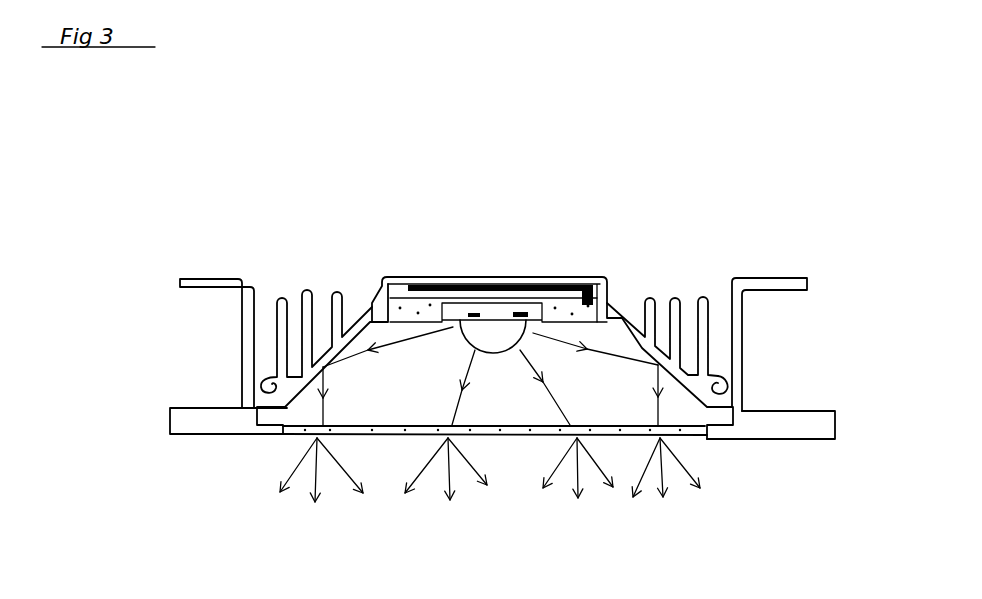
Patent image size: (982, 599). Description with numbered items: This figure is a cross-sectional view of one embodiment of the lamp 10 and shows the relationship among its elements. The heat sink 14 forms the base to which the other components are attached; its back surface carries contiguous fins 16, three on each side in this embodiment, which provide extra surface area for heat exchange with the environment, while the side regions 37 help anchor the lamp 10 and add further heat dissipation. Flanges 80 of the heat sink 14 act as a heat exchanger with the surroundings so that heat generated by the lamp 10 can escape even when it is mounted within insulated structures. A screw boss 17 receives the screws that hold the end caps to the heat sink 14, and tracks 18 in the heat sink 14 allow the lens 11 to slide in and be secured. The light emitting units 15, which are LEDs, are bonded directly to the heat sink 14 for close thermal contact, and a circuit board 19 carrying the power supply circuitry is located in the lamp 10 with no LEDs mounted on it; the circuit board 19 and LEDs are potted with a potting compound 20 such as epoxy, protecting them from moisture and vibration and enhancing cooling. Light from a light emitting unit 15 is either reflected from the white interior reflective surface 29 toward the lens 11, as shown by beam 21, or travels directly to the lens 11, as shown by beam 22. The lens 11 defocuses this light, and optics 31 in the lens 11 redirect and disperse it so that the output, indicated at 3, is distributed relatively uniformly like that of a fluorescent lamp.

The light output 3 is at (536, 438).
The lamp 10 is at (289, 199).
The lens 11 is at (293, 442).
The heat sink 14 is at (510, 277).
The light emitting units 15 is at (460, 308).
The fins 16 is at (683, 312).
The screw boss 17 is at (727, 378).
The tracks 18 is at (237, 407).
The circuit board 19 is at (412, 296).
The potting compound 20 is at (596, 294).
The beam 21 is at (632, 364).
The beam 22 is at (462, 394).
The interior reflective surface 29 is at (368, 320).
The optics 31 is at (356, 427).
The side regions 37 is at (770, 278).
The flanges 80 is at (813, 433).